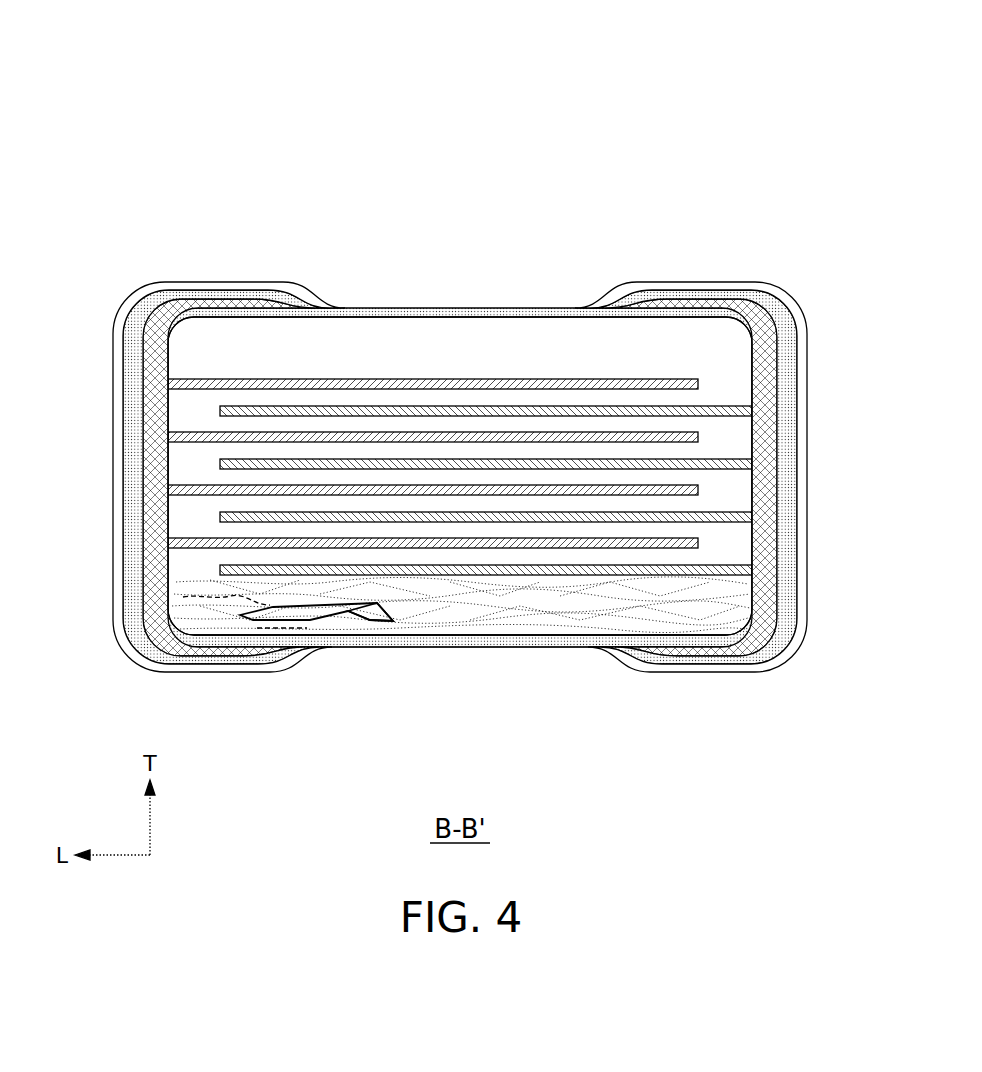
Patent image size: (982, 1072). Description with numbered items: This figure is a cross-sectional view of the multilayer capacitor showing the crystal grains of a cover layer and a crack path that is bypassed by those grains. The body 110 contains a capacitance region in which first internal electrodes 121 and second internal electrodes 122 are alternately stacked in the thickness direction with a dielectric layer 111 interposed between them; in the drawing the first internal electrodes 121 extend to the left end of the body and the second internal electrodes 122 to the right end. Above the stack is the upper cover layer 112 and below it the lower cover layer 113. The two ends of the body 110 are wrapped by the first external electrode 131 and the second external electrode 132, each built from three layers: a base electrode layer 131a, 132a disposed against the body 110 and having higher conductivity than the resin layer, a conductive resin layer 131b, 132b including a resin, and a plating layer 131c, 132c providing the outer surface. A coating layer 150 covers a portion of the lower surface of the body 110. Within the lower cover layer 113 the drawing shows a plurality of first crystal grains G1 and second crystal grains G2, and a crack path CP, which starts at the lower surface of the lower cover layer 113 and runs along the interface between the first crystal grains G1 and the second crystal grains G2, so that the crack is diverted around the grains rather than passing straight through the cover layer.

The body 110 is at (572, 303).
The dielectric layer 111 is at (533, 400).
The upper cover layer 112 is at (323, 338).
The lower cover layer 113 is at (406, 622).
The first internal electrode 121 is at (395, 381).
The second internal electrode 122 is at (463, 408).
The first external electrode 131 is at (185, 339).
The base electrode layer 131a is at (154, 452).
The conductive resin layer 131b is at (132, 482).
The plating layer 131c is at (118, 508).
The second external electrode 132 is at (734, 339).
The base electrode layer 132a is at (766, 452).
The conductive resin layer 132b is at (788, 482).
The plating layer 132c is at (803, 508).
The coating layer 150 is at (527, 641).
The crack path CP is at (138, 616).
The first crystal grains G1 is at (317, 625).
The second crystal grains G2 is at (382, 623).